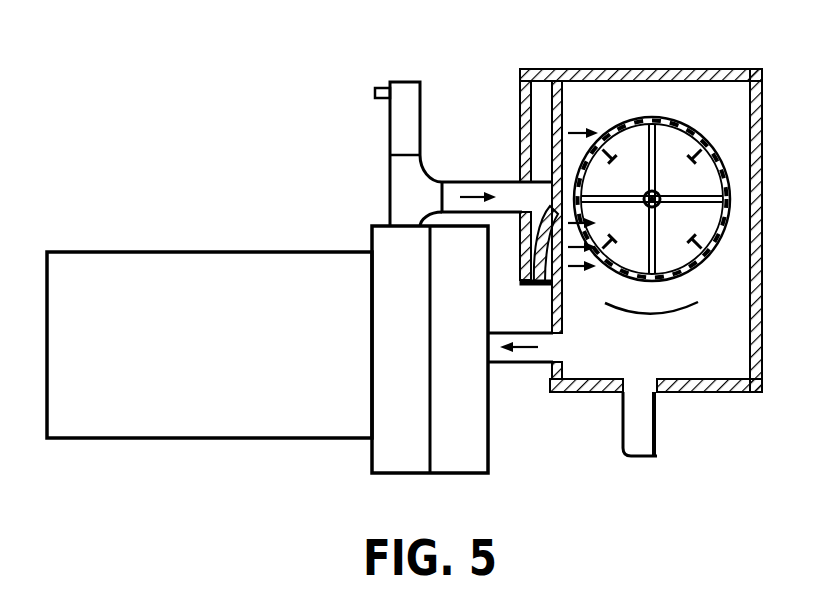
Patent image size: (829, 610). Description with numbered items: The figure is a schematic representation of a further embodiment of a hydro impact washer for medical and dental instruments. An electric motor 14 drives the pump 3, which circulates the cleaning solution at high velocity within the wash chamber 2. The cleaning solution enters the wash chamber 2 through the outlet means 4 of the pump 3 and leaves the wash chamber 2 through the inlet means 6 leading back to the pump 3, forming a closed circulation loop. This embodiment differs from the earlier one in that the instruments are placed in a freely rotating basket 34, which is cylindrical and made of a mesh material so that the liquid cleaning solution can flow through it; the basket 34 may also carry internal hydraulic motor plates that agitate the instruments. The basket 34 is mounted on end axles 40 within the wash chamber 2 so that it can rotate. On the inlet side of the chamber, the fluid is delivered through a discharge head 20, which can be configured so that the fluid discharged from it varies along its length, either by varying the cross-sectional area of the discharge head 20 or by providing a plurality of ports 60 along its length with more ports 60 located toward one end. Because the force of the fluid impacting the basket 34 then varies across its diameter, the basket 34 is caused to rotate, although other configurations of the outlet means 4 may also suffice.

The wash chamber 2 is at (715, 357).
The pump 3 is at (465, 397).
The outlet means 4 is at (478, 184).
The inlet means 6 is at (542, 363).
The electric motor 14 is at (222, 350).
The discharge head 20 is at (538, 88).
The freely rotating basket 34 is at (629, 117).
The end axles 40 is at (656, 193).
The ports 60 is at (545, 126).